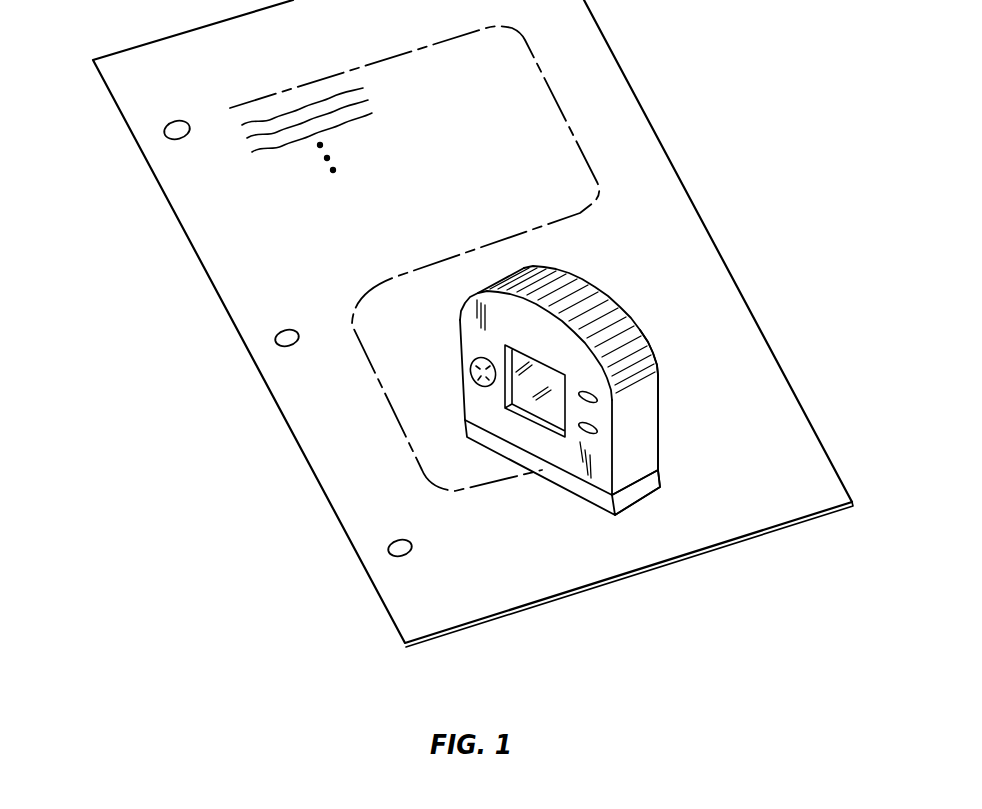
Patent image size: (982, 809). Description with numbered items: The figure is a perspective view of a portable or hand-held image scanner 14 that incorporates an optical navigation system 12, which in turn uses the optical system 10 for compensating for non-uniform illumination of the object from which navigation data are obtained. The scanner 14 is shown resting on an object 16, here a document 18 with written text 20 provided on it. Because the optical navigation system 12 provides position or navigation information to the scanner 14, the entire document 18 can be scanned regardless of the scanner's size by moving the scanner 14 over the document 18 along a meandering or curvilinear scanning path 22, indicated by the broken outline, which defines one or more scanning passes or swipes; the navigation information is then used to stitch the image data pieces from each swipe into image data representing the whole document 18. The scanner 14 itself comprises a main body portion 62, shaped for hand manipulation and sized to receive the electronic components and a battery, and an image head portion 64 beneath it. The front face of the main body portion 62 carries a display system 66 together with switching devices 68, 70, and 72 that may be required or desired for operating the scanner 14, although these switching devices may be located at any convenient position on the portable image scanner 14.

The optical system 10 is at (564, 399).
The optical navigation system 12 is at (641, 504).
The portable image scanner 14 is at (607, 286).
The object 16 is at (672, 158).
The document 18 is at (731, 270).
The written text 20 is at (373, 113).
The scanning path 22 is at (386, 398).
The main body portion 62 is at (655, 358).
The image head portion 64 is at (662, 480).
The display system 66 is at (508, 408).
The switching device 68 is at (470, 371).
The switching device 70 is at (600, 397).
The switching device 72 is at (600, 428).